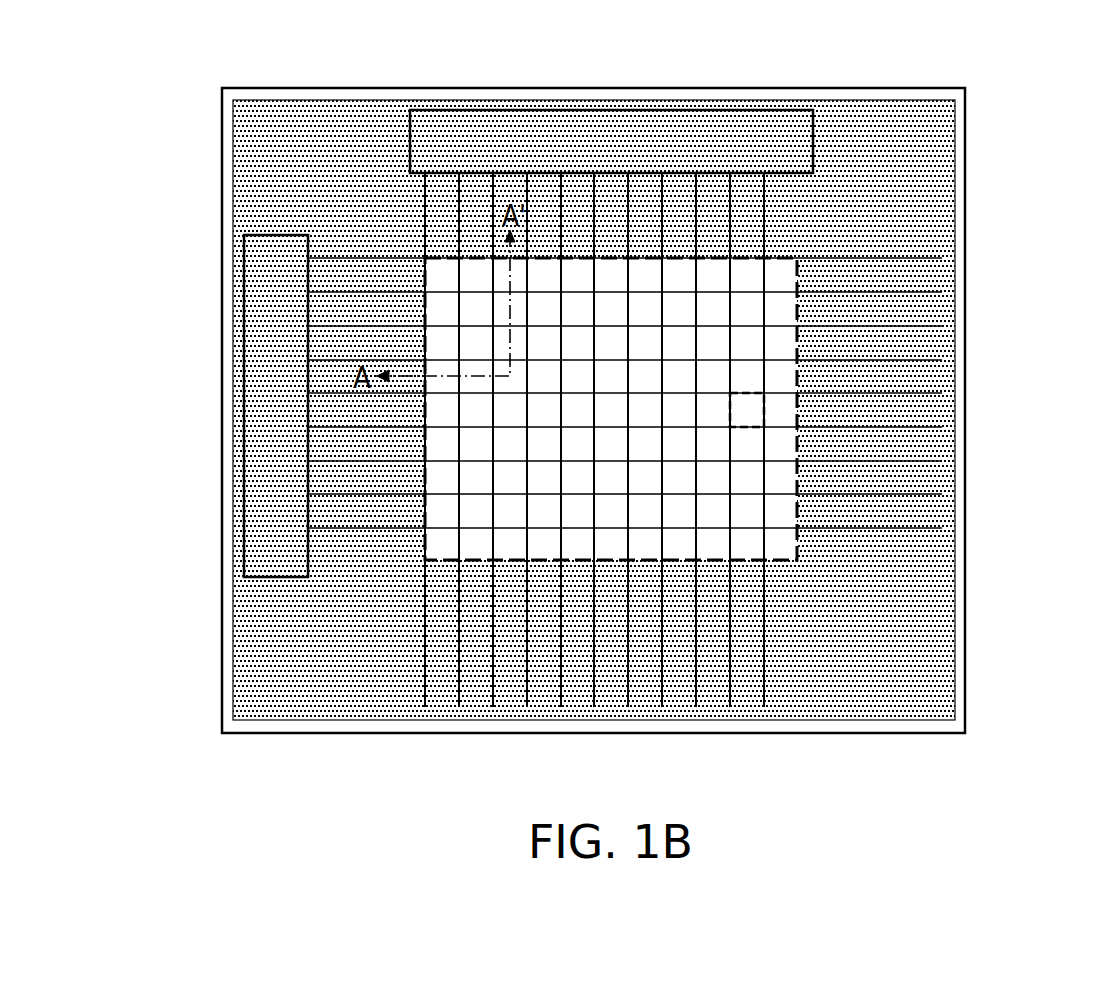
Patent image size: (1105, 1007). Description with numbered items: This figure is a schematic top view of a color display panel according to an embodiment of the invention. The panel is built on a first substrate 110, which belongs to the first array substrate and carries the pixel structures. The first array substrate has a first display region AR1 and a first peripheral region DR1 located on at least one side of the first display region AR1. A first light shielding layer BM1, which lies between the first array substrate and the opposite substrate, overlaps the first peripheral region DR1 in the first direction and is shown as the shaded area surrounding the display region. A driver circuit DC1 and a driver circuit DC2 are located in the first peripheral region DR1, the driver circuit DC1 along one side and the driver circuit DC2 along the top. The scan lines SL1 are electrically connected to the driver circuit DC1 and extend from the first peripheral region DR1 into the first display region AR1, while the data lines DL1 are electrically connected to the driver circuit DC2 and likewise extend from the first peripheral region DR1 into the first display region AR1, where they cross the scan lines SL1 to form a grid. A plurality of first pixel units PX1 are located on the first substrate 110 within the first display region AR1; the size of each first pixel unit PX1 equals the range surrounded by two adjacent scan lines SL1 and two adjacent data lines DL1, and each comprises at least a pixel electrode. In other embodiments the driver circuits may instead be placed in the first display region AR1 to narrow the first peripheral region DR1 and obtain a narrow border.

The first substrate 110 is at (228, 672).
The first light shielding layer BM1 is at (930, 611).
The first peripheral region DR1 is at (955, 187).
The driver circuit DC2 is at (695, 130).
The driver circuit DC1 is at (275, 497).
The data lines DL1 is at (764, 231).
The scan lines SL1 is at (348, 256).
The first display region AR1 is at (797, 303).
The first pixel units PX1 is at (748, 408).